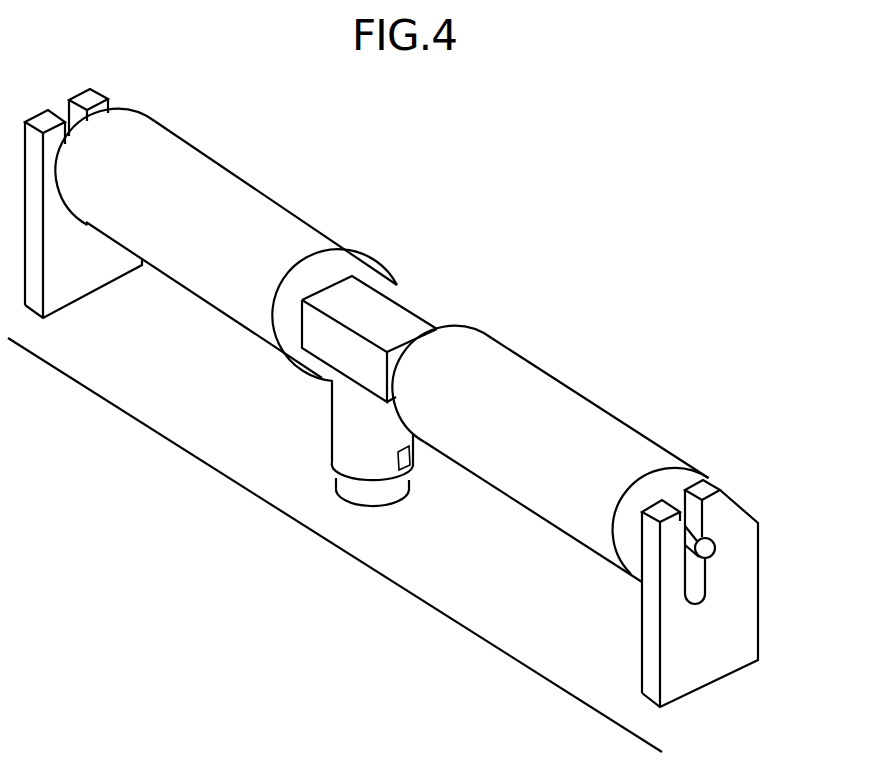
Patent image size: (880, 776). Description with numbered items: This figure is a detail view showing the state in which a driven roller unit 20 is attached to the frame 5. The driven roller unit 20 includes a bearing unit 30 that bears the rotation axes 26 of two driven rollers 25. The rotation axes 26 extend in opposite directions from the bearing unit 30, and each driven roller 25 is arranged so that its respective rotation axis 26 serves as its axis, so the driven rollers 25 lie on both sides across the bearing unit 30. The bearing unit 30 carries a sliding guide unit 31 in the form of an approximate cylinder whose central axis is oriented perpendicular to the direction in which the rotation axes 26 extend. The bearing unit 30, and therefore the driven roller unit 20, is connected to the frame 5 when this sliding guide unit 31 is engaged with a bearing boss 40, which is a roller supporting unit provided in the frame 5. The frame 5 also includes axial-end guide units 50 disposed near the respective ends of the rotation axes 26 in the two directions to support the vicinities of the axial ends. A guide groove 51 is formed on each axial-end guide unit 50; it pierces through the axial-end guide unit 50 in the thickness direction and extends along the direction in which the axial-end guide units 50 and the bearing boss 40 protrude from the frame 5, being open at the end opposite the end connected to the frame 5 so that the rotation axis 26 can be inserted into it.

The frame 5 is at (188, 433).
The driven roller unit 20 is at (610, 253).
The driven roller 25 is at (272, 212).
The rotation axis 26 is at (708, 548).
The bearing unit 30 is at (412, 312).
The sliding guide unit 31 is at (332, 428).
The bearing boss 40 is at (410, 481).
The axial-end guide unit 50 is at (730, 582).
The guide groove 51 is at (697, 577).